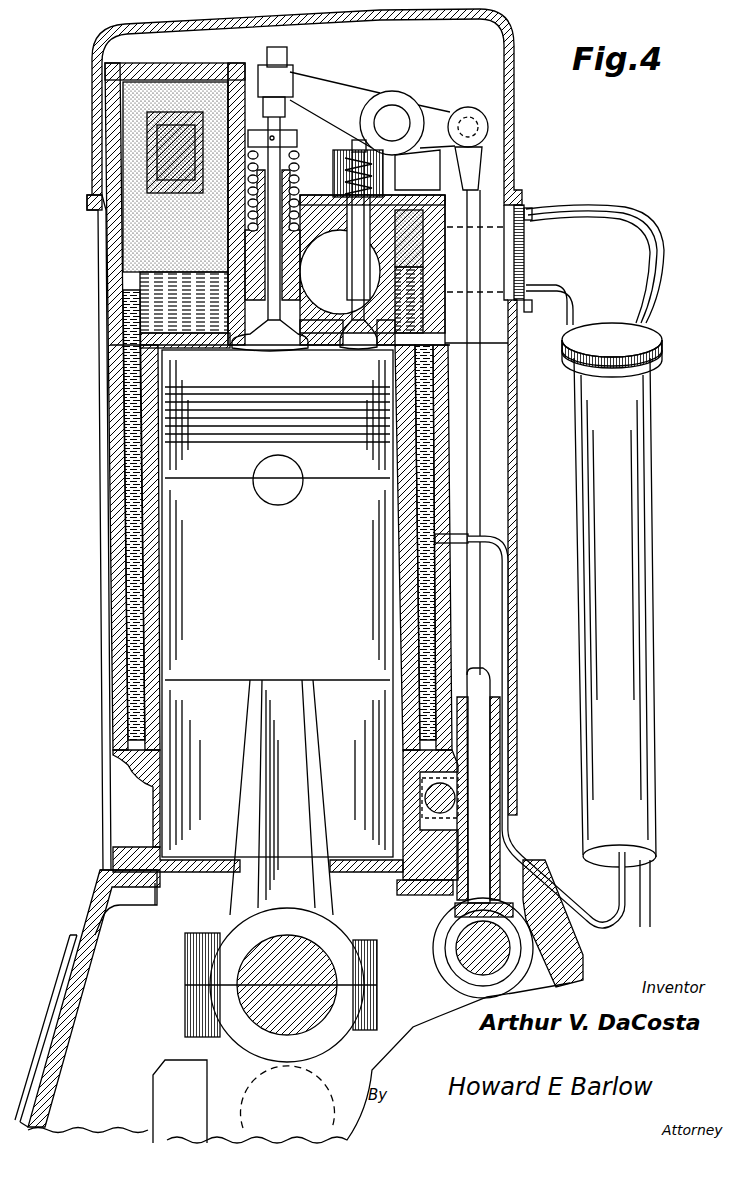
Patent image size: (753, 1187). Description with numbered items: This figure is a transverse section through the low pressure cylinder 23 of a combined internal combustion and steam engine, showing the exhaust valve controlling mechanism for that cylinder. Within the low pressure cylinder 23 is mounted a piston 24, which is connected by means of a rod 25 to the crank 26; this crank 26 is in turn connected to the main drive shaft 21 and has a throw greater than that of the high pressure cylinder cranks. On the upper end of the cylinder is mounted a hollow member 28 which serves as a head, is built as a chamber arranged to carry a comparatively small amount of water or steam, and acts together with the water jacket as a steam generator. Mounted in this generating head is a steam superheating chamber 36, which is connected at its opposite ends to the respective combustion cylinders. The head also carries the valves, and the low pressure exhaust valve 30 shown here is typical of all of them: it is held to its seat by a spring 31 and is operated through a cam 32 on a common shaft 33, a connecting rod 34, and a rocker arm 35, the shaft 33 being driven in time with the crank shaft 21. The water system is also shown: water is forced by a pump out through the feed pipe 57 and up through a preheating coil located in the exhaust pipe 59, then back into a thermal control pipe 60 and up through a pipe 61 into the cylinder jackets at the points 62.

The main drive shaft 21 is at (372, 1072).
The low pressure cylinder 23 is at (120, 364).
The piston 24 is at (200, 546).
The rod 25 is at (270, 778).
The crank 26 is at (268, 987).
The hollow member 28 is at (135, 98).
The low pressure exhaust valve 30 is at (262, 350).
The spring 31 is at (297, 148).
The cam 32 is at (450, 928).
The common shaft 33 is at (473, 960).
The connecting rod 34 is at (476, 416).
The rocker arm 35 is at (326, 92).
The steam superheating chamber 36 is at (172, 147).
The feed pipe 57 is at (647, 912).
The exhaust pipe 59 is at (650, 586).
The thermal control pipe 60 is at (455, 793).
The pipe 61 is at (500, 630).
The points 62 is at (455, 535).